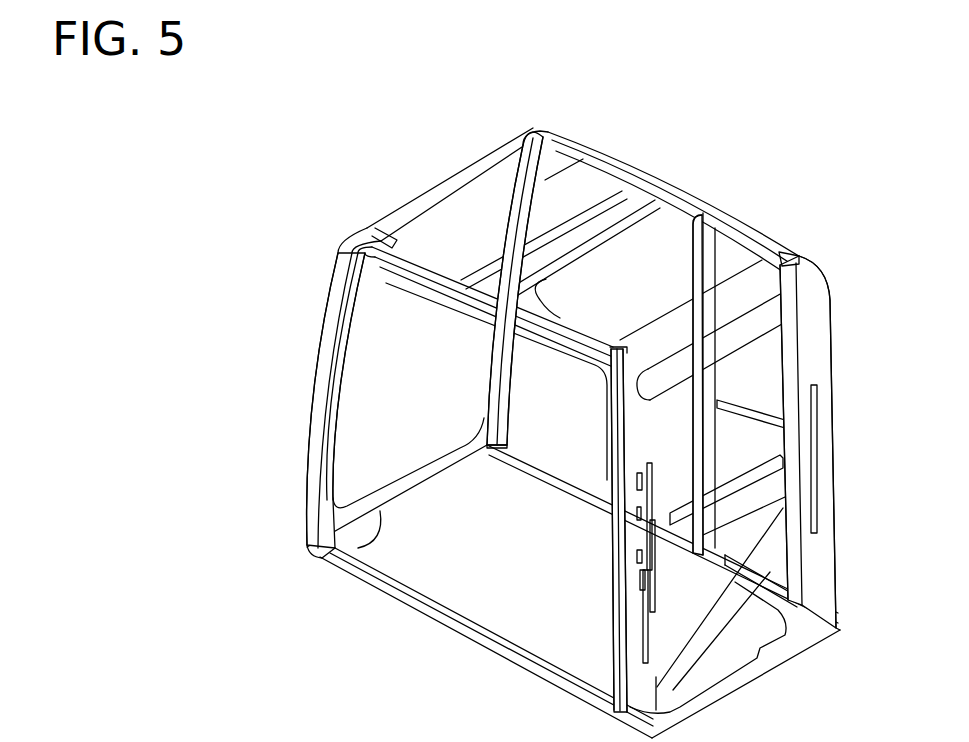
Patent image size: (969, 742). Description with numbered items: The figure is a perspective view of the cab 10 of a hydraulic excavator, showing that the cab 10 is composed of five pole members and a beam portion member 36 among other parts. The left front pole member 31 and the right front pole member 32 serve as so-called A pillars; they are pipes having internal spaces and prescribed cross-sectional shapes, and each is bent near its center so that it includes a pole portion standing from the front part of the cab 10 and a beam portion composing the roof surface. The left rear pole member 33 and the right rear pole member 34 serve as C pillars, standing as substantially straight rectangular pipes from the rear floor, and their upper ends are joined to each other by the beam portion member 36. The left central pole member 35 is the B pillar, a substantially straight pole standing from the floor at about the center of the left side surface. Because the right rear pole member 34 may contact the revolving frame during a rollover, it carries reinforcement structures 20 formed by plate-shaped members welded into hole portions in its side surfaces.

The cab 10 is at (368, 122).
The reinforcement structures 20 is at (829, 403).
The left front pole member 31 is at (518, 193).
The right front pole member 32 is at (340, 297).
The left rear pole member 33 is at (827, 562).
The right rear pole member 34 is at (628, 412).
The left central pole member 35 is at (708, 387).
The beam portion member 36 is at (765, 320).